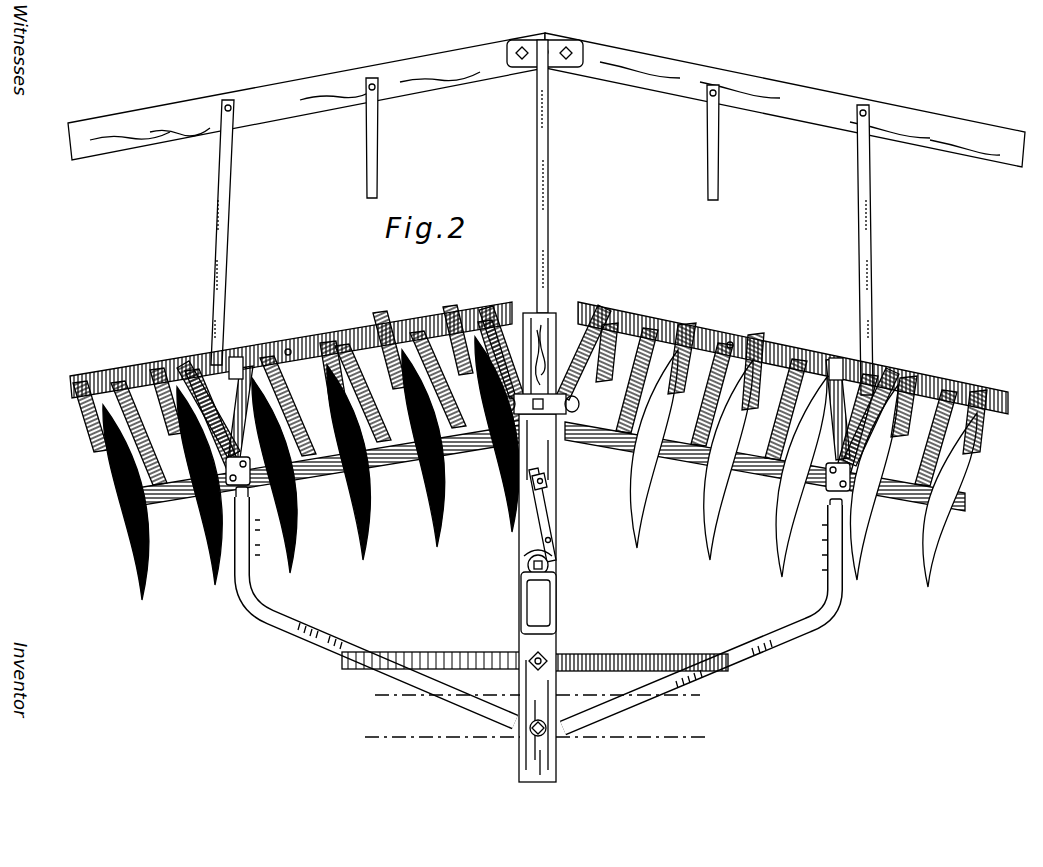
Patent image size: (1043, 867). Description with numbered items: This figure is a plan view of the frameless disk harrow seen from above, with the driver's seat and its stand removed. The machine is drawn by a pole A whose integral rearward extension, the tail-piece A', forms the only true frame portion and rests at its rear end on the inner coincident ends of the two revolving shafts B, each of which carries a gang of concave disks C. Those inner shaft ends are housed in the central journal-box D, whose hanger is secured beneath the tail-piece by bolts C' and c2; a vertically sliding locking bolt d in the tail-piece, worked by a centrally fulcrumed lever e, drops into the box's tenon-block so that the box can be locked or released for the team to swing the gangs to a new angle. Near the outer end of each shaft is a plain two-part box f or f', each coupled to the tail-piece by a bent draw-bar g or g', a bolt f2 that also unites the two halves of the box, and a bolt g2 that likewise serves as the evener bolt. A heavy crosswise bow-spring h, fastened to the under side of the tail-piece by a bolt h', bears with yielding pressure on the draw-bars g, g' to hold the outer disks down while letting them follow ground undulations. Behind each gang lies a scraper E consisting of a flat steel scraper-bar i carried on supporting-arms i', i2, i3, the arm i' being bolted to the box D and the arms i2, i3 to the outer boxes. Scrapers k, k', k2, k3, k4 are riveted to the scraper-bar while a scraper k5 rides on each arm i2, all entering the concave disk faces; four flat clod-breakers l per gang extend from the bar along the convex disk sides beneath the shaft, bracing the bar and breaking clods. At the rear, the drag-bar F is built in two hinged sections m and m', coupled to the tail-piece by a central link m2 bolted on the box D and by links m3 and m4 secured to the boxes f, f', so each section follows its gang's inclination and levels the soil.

The drag-bar F is at (531, 38).
The drag-bar section m is at (306, 96).
The drag-bar section m' is at (785, 100).
The central link m2 is at (556, 176).
The link m3 is at (234, 232).
The link m4 is at (880, 250).
The scraper E is at (539, 354).
The pole A is at (537, 600).
The tail-piece A' is at (548, 344).
The journal-box D is at (545, 405).
The bolt C' is at (535, 393).
The scraper-bar i is at (507, 335).
The supporting-arm i' is at (545, 352).
The supporting-arm i2 is at (539, 409).
The supporting-arm i3 is at (868, 430).
The scraper k is at (534, 347).
The scraper k' is at (537, 354).
The scraper k2 is at (538, 374).
The scraper k3 is at (541, 408).
The scraper k4 is at (541, 420).
The scraper k5 is at (833, 359).
The clod-breaker l is at (534, 403).
The revolving shaft B is at (545, 466).
The disk C is at (540, 468).
The two-part box f is at (246, 486).
The two-part box f' is at (826, 494).
The bolt f2 is at (833, 510).
The bent draw-bar g is at (378, 609).
The bent draw-bar g' is at (699, 616).
The bolt g2 is at (550, 730).
The bow-spring h is at (535, 651).
The bolt h' is at (561, 645).
The locking bolt d is at (548, 489).
The lever e is at (557, 529).
The bolt c2 is at (534, 565).